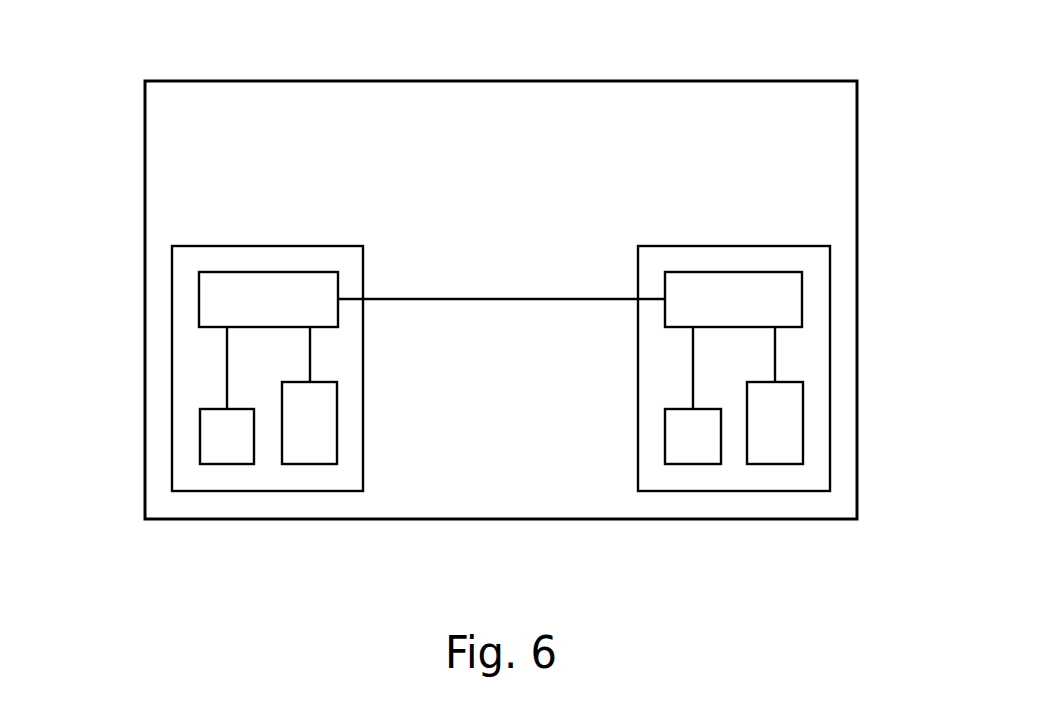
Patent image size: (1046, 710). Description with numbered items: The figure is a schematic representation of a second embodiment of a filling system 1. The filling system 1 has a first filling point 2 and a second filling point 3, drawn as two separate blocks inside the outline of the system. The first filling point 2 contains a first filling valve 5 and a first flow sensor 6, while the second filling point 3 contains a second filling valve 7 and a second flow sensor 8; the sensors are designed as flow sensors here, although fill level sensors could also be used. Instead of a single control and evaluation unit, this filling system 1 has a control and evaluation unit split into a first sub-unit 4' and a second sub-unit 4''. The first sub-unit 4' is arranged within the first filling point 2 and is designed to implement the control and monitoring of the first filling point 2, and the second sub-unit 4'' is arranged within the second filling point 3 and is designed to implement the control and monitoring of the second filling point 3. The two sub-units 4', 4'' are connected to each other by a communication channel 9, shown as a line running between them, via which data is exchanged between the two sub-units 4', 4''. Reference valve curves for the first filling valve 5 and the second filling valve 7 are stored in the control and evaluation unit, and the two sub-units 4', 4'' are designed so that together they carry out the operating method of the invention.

The filling system 1 is at (858, 113).
The first filling point 2 is at (172, 394).
The second filling point 3 is at (830, 395).
The first sub-unit 4' is at (194, 293).
The second sub-unit 4'' is at (812, 293).
The first filling valve 5 is at (227, 464).
The first flow sensor 6 is at (310, 464).
The second filling valve 7 is at (693, 464).
The second flow sensor 8 is at (775, 464).
The communication channel 9 is at (528, 300).